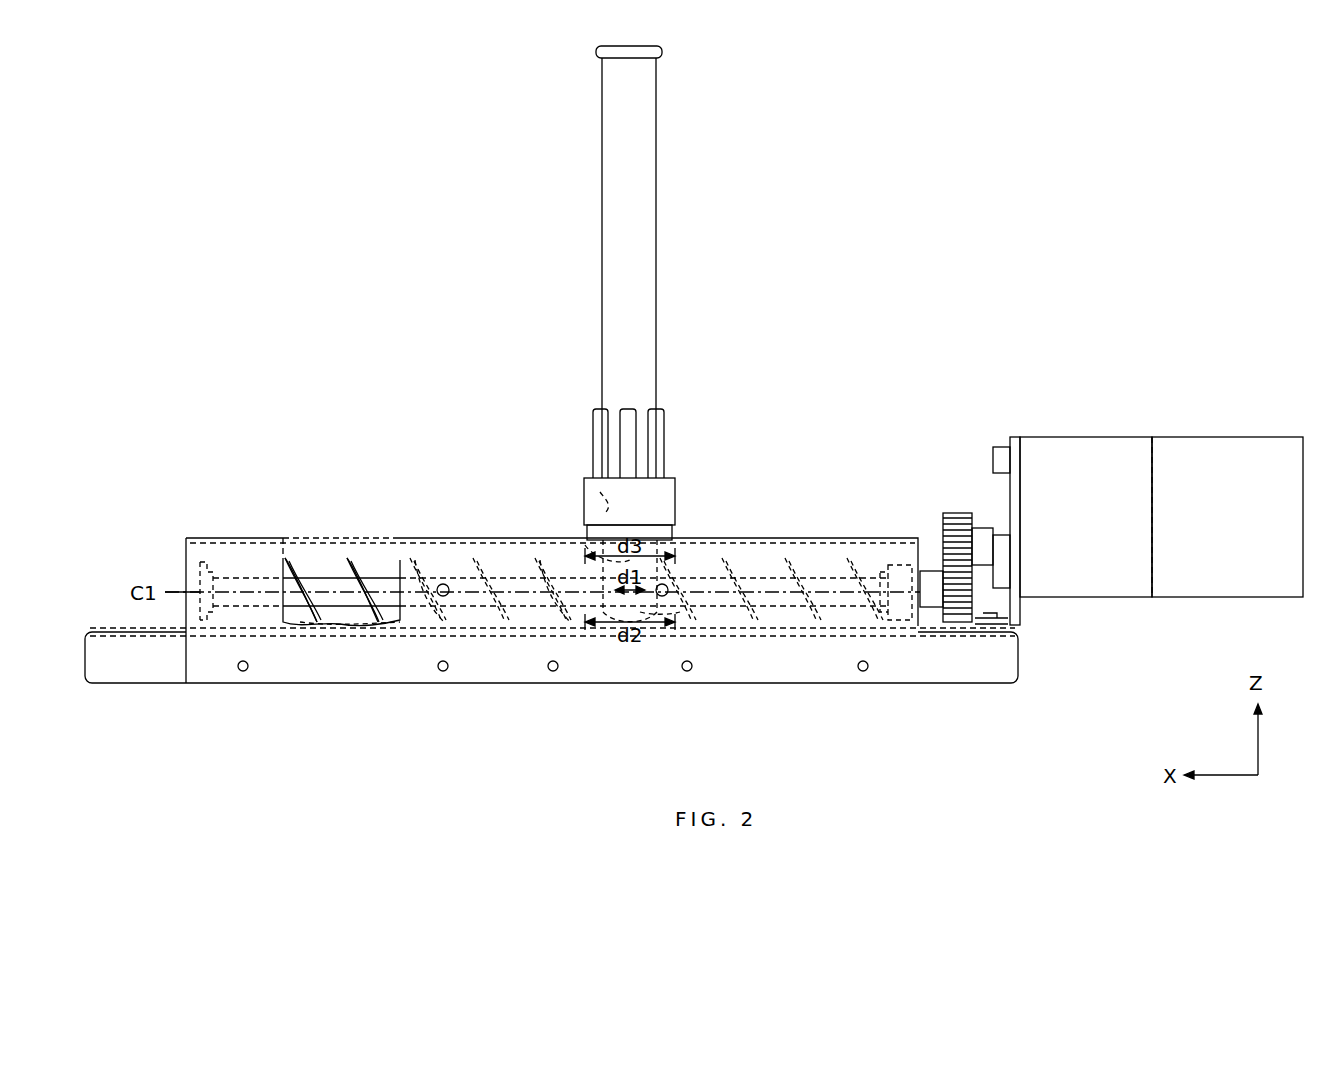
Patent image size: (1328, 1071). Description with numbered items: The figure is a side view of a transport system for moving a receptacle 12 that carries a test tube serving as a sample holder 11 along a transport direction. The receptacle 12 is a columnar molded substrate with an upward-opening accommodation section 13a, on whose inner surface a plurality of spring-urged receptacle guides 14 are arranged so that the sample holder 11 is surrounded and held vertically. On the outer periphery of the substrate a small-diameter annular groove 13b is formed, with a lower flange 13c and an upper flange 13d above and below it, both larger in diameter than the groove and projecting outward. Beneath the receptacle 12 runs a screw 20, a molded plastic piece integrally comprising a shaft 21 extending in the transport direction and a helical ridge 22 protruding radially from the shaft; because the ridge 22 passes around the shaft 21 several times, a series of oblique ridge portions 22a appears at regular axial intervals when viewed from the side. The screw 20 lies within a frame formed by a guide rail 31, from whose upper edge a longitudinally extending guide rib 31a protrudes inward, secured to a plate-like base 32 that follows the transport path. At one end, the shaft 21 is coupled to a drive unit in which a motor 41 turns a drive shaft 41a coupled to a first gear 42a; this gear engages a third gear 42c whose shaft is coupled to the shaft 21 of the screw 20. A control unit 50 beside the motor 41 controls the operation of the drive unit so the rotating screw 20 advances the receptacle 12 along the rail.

The sample holder 11 is at (657, 230).
The receptacle 12 is at (677, 498).
The accommodation section 13a is at (605, 498).
The annular groove 13b is at (690, 578).
The flange 13c is at (683, 640).
The flange 13d is at (572, 560).
The receptacle guides 14 is at (660, 432).
The screw 20 is at (720, 640).
The shaft 21 is at (650, 622).
The helical ridge 22 is at (345, 560).
The oblique ridge portions 22a is at (535, 545).
The guide rail 31 is at (780, 530).
The guide rib 31a is at (410, 558).
The base 32 is at (510, 640).
The motor 41 is at (1083, 440).
The drive shaft 41a is at (1000, 535).
The first gear 42a is at (955, 545).
The third gear 42c is at (950, 622).
The control unit 50 is at (1237, 440).